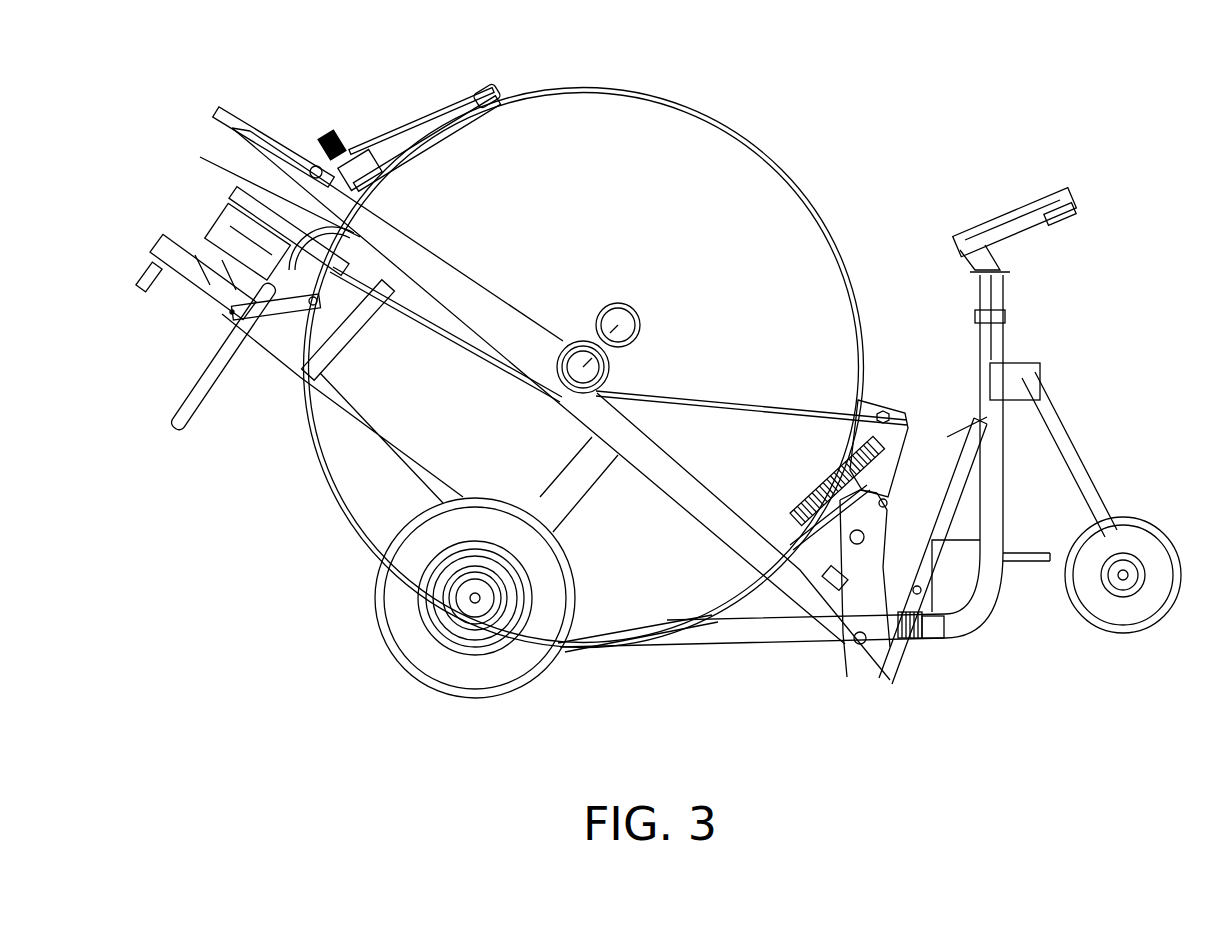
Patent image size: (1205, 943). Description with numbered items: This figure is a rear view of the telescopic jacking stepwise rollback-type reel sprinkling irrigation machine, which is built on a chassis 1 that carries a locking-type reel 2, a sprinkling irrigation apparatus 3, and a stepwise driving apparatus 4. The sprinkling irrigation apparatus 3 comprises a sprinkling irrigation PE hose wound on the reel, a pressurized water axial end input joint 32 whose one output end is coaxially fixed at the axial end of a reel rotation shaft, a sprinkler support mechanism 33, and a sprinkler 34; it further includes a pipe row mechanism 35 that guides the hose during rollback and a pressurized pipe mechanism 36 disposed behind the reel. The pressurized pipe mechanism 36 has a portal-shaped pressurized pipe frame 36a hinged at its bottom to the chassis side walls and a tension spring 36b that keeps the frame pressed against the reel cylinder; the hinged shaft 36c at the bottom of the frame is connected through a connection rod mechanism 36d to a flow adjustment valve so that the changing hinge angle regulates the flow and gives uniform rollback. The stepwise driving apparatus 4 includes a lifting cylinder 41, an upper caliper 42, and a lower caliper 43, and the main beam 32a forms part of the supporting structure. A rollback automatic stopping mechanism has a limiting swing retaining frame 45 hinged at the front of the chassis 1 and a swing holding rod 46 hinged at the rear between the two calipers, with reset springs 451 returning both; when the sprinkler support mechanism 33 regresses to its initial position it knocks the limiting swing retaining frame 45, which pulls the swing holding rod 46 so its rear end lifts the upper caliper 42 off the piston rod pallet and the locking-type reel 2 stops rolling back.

The chassis 1 is at (393, 447).
The locking-type reel 2 is at (393, 494).
The sprinkling irrigation apparatus 3 is at (1000, 300).
The stepwise driving apparatus 4 is at (228, 252).
The pressurized water axial end input joint 32 is at (642, 322).
The main beam 32a is at (574, 427).
The sprinkler support mechanism 33 is at (1062, 452).
The sprinkler 34 is at (1033, 195).
The pipe row mechanism 35 is at (912, 622).
The pressurized pipe mechanism 36 is at (427, 120).
The pressurized pipe frame 36a is at (492, 90).
The tension spring 36b is at (334, 133).
The hinged shaft 36c is at (311, 168).
The connection rod mechanism 36d is at (442, 262).
The lifting cylinder 41 is at (222, 250).
The upper caliper 42 is at (233, 193).
The lower caliper 43 is at (232, 312).
The limiting swing retaining frame 45 is at (897, 402).
The reset springs 451 is at (890, 420).
The swing holding rod 46 is at (290, 238).